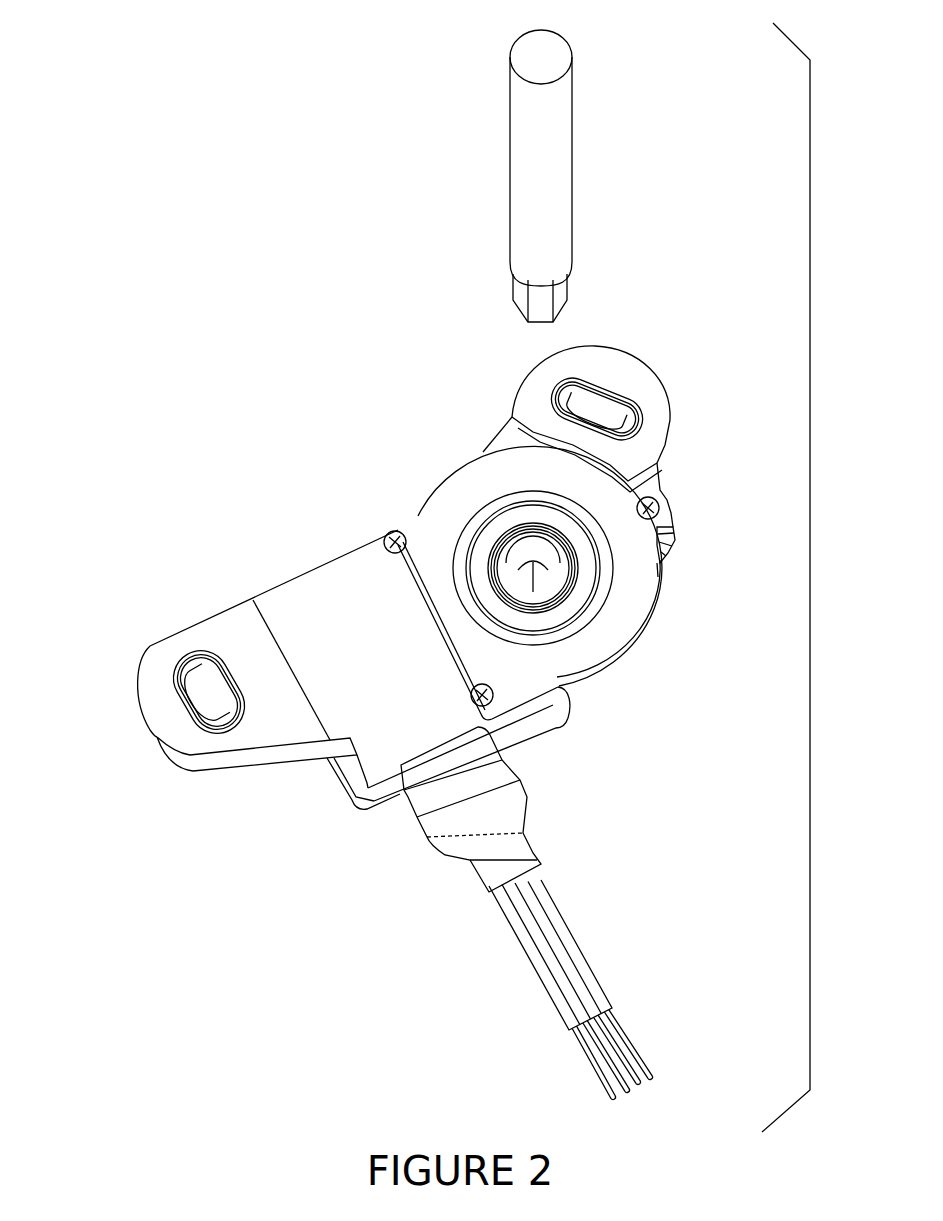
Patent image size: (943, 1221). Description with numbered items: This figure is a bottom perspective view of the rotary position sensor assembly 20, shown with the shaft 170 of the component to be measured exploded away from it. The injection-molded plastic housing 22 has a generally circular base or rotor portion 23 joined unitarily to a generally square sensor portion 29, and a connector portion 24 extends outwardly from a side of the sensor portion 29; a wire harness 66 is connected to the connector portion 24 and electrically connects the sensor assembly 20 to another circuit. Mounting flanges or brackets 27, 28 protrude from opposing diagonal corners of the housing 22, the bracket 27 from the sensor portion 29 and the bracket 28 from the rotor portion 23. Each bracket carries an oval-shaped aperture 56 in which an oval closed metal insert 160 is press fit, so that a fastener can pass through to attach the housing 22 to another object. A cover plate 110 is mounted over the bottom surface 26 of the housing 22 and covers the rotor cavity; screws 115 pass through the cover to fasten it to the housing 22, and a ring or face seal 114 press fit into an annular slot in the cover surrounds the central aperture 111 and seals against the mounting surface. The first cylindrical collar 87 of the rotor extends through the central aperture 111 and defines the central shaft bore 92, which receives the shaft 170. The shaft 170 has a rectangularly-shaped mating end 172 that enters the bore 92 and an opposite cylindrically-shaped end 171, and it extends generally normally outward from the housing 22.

The rotary position sensor assembly 20 is at (194, 314).
The housing 22 is at (656, 650).
The base or rotor portion 23 is at (282, 588).
The connector portion 24 is at (428, 763).
The bottom surface 26 is at (336, 586).
The mounting flange or bracket 27 is at (170, 753).
The mounting flange or bracket 28 is at (650, 358).
The sensor portion 29 is at (545, 730).
The oval-shaped apertures or through-holes 56 is at (203, 680).
The wire harness 66 is at (528, 936).
The first cylindrical collar 87 is at (650, 565).
The central shaft bore or through-hole 92 is at (553, 547).
The cover plate 110 is at (633, 591).
The central aperture 111 is at (527, 527).
The ring or face seal 114 is at (489, 510).
The fasteners or screws 115 is at (394, 530).
The oval-shaped closed metal inserts 160 is at (183, 703).
The shaft 170 is at (576, 197).
The cylindrically-shaped end 171 is at (572, 80).
The rectangularly-shaped end 172 is at (568, 289).